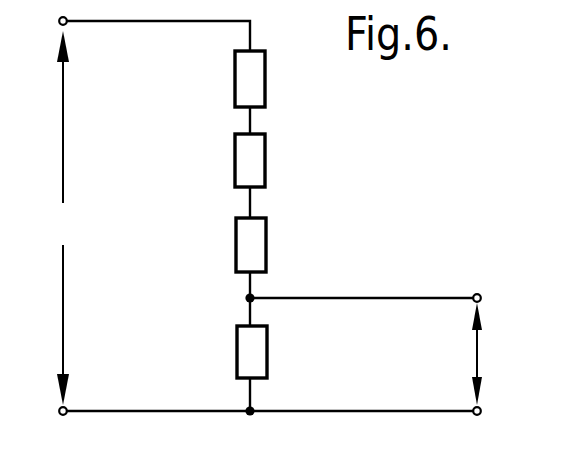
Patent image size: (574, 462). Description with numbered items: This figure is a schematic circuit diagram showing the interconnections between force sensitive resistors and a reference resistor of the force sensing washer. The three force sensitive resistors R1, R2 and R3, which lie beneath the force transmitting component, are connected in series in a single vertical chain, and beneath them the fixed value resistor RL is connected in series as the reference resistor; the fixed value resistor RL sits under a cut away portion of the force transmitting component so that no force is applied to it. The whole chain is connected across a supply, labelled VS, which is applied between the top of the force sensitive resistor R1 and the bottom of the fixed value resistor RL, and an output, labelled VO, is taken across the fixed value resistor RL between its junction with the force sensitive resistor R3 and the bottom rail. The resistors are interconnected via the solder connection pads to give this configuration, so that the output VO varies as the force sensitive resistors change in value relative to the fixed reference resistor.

The force sensitive resistor R1 is at (271, 79).
The force sensitive resistor R2 is at (271, 160).
The force sensitive resistor R3 is at (272, 245).
The fixed value resistor RL is at (272, 352).
The source voltage VS is at (66, 218).
The output voltage VO is at (495, 354).